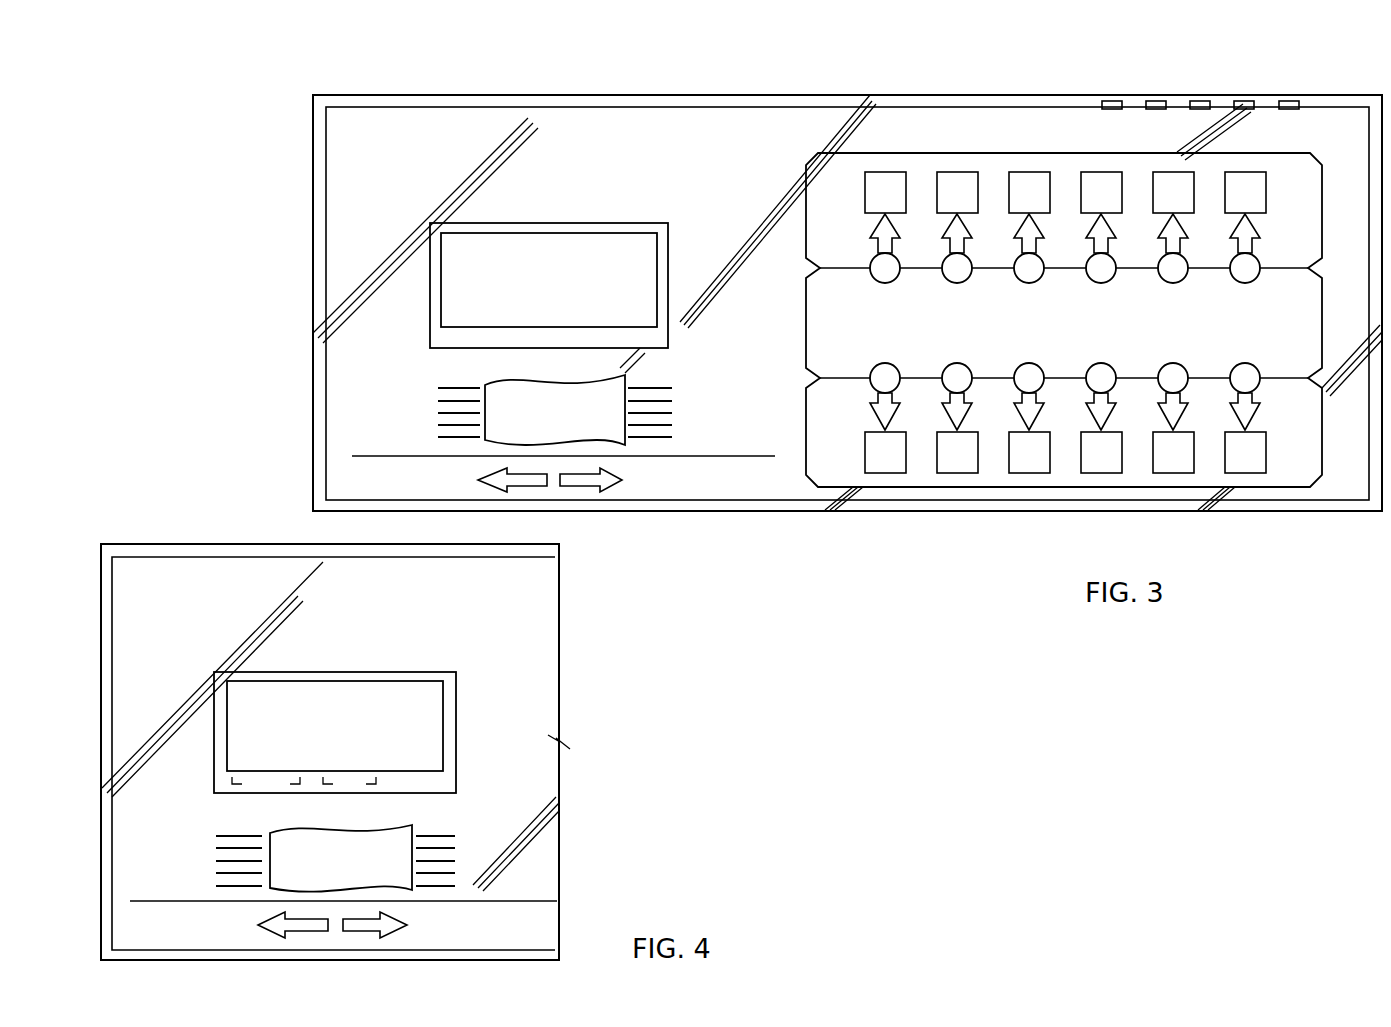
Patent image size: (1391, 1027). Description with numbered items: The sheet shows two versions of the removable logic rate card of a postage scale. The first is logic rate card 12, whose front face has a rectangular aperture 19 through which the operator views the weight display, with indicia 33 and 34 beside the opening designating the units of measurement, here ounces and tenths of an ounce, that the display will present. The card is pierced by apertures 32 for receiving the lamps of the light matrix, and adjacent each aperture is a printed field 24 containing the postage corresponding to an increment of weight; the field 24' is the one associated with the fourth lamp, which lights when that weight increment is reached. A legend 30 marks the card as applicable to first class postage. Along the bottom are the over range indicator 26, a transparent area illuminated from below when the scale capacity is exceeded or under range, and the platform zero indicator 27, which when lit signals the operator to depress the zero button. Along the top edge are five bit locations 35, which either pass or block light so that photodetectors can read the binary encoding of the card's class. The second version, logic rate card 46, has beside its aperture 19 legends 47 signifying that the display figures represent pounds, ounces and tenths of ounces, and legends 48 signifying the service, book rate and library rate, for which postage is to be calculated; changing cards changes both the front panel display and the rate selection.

In FIG. 3, the logic rate card 12 is at (337, 388).
In FIG. 3, the rectangular aperture 19 is at (483, 285).
In FIG. 4, the rectangular aperture 19 is at (232, 700).
In FIG. 3, the field 24 is at (1102, 315).
In FIG. 3, the field 24' is at (1220, 161).
In FIG. 3, the over range indicator 26 is at (528, 486).
In FIG. 4, the over range indicator 26 is at (297, 934).
In FIG. 3, the platform zero indicator 27 is at (573, 486).
In FIG. 4, the platform zero indicator 27 is at (365, 934).
In FIG. 3, the legend 30 is at (480, 378).
In FIG. 3, the apertures 32 is at (1017, 262).
In FIG. 3, the indicia 33 is at (460, 345).
In FIG. 3, the indicia 34 is at (655, 340).
In FIG. 3, the bit locations 35 is at (1339, 66).
In FIG. 4, the logic rate card 46 is at (555, 621).
In FIG. 4, the legends 47 is at (220, 783).
In FIG. 4, the legends 48 is at (270, 833).